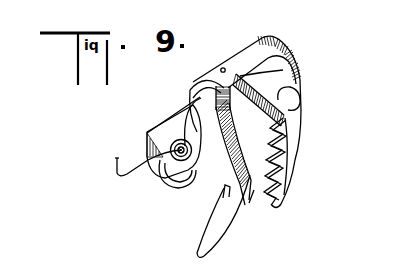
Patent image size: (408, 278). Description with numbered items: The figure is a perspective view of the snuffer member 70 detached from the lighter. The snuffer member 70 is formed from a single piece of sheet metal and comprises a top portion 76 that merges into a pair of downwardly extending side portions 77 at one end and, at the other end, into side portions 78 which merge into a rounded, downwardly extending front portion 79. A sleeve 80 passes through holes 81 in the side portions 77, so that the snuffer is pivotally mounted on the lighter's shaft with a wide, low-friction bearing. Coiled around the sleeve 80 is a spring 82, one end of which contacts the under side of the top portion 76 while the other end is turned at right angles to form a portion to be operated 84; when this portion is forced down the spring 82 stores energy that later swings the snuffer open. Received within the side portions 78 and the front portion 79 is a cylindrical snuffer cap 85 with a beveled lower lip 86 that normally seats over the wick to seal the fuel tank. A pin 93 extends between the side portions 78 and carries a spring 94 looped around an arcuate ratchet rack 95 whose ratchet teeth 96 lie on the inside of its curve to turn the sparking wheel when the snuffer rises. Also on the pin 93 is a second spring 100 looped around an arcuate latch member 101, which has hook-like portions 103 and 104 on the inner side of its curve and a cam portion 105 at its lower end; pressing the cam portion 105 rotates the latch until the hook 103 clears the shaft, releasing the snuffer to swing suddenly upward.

The snuffer member 70 is at (98, 122).
The top portion 76 is at (195, 99).
The side portions 77 is at (167, 130).
The side portions 78 is at (242, 55).
The front portion 79 is at (287, 53).
The sleeve 80 is at (193, 147).
The holes 81 is at (163, 157).
The spring 82 is at (170, 178).
The portion to be operated 84 is at (113, 163).
The snuffer cap 85 is at (283, 72).
The beveled lower lip 86 is at (281, 102).
The pin 93 is at (223, 67).
The spring 94 is at (268, 80).
The arcuate ratchet rack 95 is at (290, 134).
The ratchet teeth 96 is at (272, 133).
The second spring 100 is at (215, 92).
The latch member 101 is at (249, 203).
The hook-like portion 103 is at (227, 153).
The hook-like portion 104 is at (230, 197).
The cam portion 105 is at (215, 223).